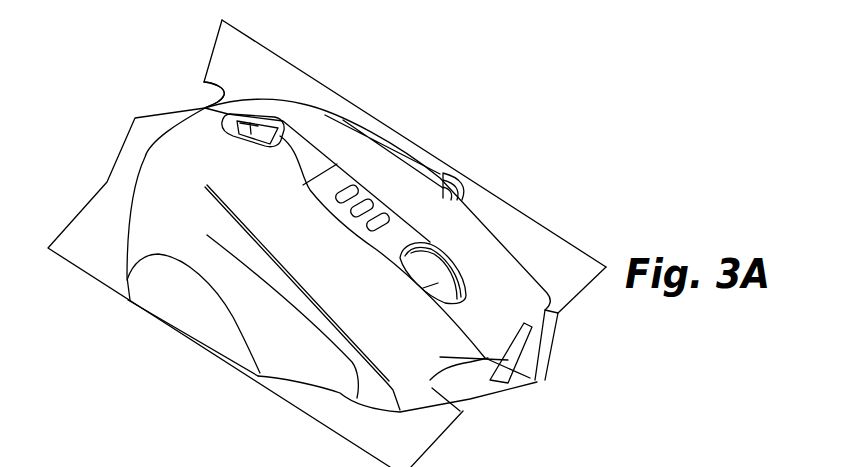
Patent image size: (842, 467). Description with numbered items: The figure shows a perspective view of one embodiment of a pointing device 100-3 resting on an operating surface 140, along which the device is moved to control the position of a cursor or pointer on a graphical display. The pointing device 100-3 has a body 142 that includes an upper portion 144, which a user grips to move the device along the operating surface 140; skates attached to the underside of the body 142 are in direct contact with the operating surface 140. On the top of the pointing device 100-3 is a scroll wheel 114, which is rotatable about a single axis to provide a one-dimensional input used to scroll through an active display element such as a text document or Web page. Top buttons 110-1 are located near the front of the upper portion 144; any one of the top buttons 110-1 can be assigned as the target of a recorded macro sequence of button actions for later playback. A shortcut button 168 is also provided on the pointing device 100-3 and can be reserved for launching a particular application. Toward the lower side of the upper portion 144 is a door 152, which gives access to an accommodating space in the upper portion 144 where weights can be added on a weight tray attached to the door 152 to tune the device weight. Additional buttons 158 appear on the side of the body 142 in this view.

The pointing device 100-3 is at (586, 117).
The top buttons 110-1 is at (530, 300).
The scroll wheel 114 is at (438, 283).
The operating surface 140 is at (567, 265).
The body 142 is at (309, 98).
The upper portion 144 is at (283, 368).
The door 152 is at (165, 293).
The side buttons 158 is at (363, 228).
The shortcut button 168 is at (204, 82).